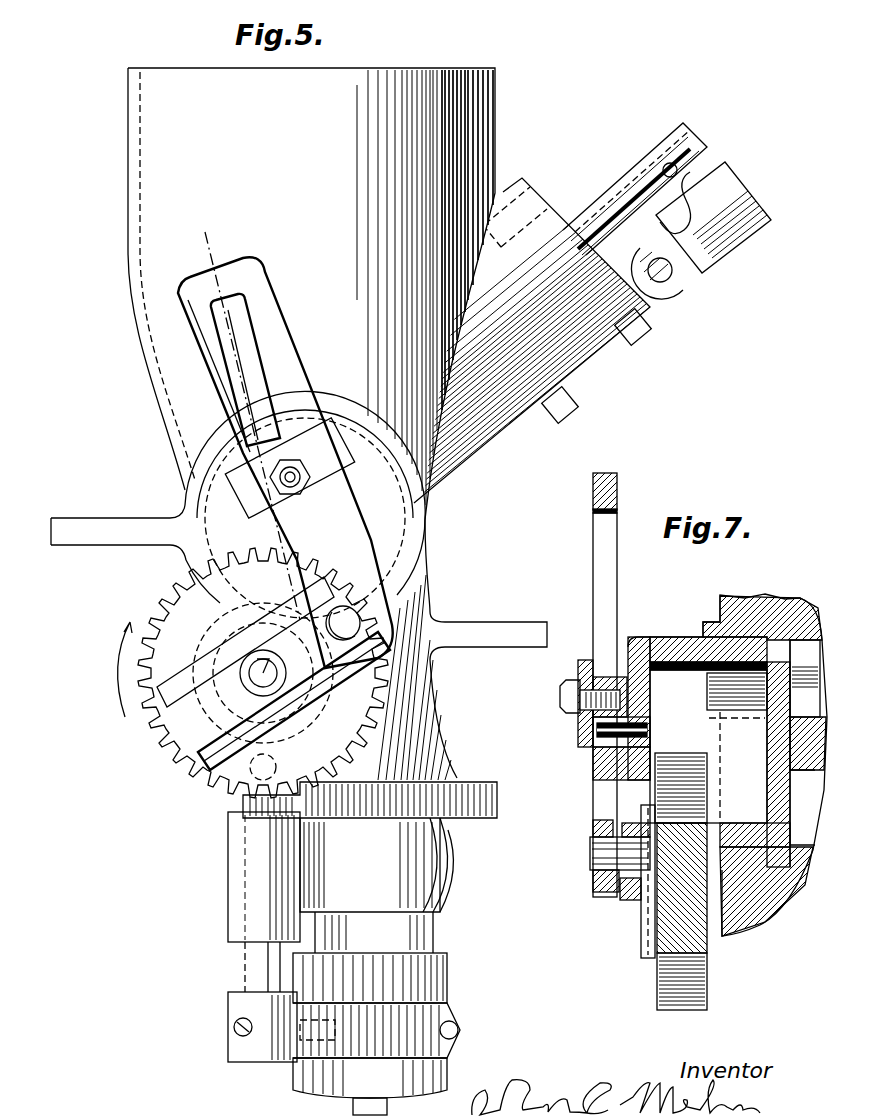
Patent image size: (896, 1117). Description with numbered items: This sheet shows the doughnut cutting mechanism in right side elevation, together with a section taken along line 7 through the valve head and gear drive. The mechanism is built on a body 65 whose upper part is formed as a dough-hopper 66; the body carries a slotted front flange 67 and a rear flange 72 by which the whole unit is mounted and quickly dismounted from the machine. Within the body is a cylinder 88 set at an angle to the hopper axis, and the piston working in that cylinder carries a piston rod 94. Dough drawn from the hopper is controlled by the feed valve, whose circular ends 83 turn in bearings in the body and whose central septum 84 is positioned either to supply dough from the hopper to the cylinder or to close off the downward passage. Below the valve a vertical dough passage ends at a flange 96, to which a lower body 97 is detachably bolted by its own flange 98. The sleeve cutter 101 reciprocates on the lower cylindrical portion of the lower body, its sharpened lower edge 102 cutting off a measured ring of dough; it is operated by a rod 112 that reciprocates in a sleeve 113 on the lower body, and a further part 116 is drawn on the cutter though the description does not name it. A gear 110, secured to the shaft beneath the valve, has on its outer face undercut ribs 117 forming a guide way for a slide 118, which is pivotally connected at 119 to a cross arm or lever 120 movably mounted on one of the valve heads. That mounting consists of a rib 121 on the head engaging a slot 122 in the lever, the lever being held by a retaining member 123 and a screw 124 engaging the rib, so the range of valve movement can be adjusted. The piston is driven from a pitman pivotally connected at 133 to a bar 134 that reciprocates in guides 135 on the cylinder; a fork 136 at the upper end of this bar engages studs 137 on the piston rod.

In FIG. 5, the section line 7— 7 is at (223, 240).
In FIG. 5, the body 65 is at (132, 344).
In FIG. 5, the dough-hopper 66 is at (311, 424).
In FIG. 5, the front flange 67 is at (61, 522).
In FIG. 5, the rear flange 72 is at (526, 636).
In FIG. 5, the circular ends of the valve 83 is at (192, 482).
In FIG. 7, the circular ends of the valve 83 is at (724, 648).
In FIG. 7, the central plate or septum 84 is at (800, 745).
In FIG. 5, the cylinder 88 is at (520, 436).
In FIG. 5, the piston rod 94 is at (593, 223).
In FIG. 5, the flange 96 is at (463, 786).
In FIG. 5, the lower body 97 is at (471, 884).
In FIG. 5, the flange 98 is at (497, 812).
In FIG. 5, the cylindrical or sleeve cutter 101 is at (447, 986).
In FIG. 5, the sharpened lower edge 102 is at (300, 1096).
In FIG. 5, the gear 110 is at (138, 660).
In FIG. 7, the gear 110 is at (708, 985).
In FIG. 5, the rod 112 is at (256, 961).
In FIG. 5, the sleeve 113 is at (230, 879).
In FIG. 5, the pin 116 is at (456, 1046).
In FIG. 5, the undercut ribs 117 is at (156, 722).
In FIG. 7, the undercut ribs 117 is at (646, 921).
In FIG. 5, the slide 118 is at (215, 732).
In FIG. 7, the slide 118 is at (626, 890).
In FIG. 5, the pivotal connection 119 is at (362, 630).
In FIG. 7, the pivotal connection 119 is at (597, 853).
In FIG. 5, the cross arm or lever 120 is at (283, 330).
In FIG. 7, the cross arm or lever 120 is at (618, 484).
In FIG. 5, the rib 121 is at (432, 522).
In FIG. 7, the rib 121 is at (595, 776).
In FIG. 5, the slot 122 is at (249, 305).
In FIG. 7, the slot 122 is at (612, 573).
In FIG. 5, the retaining member 123 is at (248, 460).
In FIG. 7, the retaining member 123 is at (579, 739).
In FIG. 5, the screw 124 is at (291, 462).
In FIG. 7, the screw 124 is at (559, 701).
In FIG. 5, the pivotal connection 133 is at (673, 274).
In FIG. 5, the bar 134 is at (664, 300).
In FIG. 5, the guides 135 is at (577, 397).
In FIG. 5, the fork 136 is at (694, 174).
In FIG. 5, the studs 137 is at (655, 171).